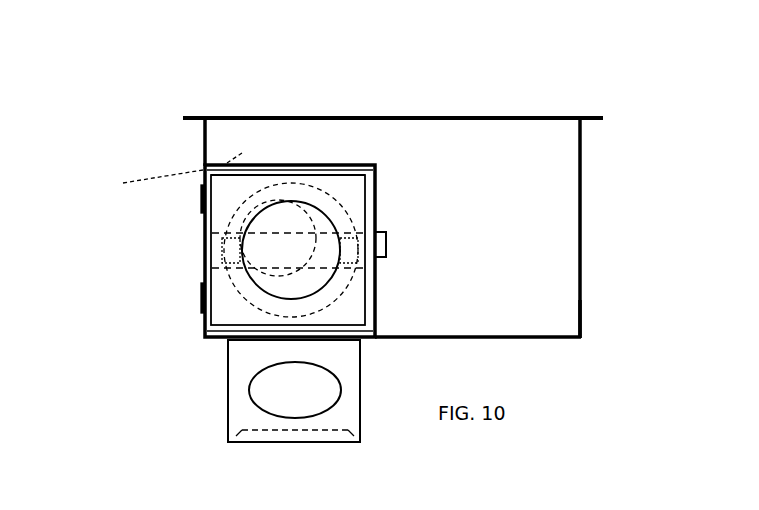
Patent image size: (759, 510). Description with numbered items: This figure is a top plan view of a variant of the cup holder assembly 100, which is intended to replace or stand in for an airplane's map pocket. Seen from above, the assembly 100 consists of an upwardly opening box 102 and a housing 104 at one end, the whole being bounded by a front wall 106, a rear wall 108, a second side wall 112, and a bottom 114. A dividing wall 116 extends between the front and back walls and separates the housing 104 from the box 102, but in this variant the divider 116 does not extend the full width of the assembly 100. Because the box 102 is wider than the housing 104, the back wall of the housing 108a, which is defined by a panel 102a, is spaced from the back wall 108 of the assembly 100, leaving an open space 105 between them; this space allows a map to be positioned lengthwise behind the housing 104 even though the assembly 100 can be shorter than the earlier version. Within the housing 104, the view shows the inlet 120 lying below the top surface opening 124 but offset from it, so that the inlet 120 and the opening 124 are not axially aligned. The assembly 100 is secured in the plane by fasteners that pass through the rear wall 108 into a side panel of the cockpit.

The cup holder assembly 100 is at (377, 93).
The upwardly opening box 102 is at (502, 117).
The panel 102a is at (250, 195).
The housing 104 is at (270, 165).
The open space 105 is at (294, 165).
The front wall 106 is at (528, 341).
The rear wall 108 is at (295, 165).
The back wall of the housing 108a is at (375, 165).
The second side wall 112 is at (645, 225).
The bottom 114 is at (563, 304).
The dividing wall 116 is at (427, 285).
The inlet 120 is at (380, 210).
The top opening 124 is at (392, 245).